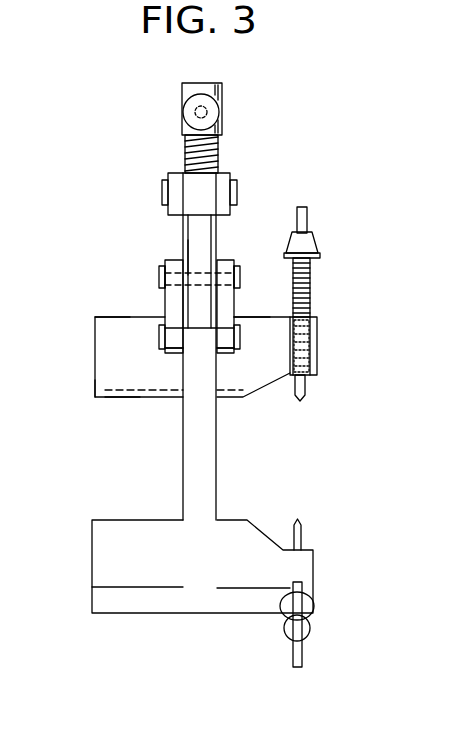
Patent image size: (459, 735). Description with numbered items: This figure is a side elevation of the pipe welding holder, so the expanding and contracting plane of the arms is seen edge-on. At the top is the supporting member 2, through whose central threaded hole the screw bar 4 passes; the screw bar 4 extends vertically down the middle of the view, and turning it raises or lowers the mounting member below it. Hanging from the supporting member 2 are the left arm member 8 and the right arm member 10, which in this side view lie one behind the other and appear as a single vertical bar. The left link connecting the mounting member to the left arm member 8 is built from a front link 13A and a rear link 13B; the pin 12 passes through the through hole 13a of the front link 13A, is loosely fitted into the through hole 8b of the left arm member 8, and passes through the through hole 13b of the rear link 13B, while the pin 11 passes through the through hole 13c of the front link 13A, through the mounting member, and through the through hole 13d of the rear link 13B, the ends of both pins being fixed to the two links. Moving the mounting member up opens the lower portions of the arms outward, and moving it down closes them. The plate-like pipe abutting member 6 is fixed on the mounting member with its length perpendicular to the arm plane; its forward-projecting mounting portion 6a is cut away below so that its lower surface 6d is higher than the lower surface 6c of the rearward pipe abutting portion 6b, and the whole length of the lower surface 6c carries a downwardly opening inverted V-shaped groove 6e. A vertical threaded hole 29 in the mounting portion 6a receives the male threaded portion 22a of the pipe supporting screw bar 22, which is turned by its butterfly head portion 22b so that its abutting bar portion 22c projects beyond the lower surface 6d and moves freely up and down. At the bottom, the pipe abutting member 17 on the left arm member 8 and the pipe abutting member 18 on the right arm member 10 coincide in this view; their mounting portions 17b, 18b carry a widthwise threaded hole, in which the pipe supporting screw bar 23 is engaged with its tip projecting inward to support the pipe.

The supporting member 2 is at (228, 175).
The screw bar 4 is at (180, 232).
The pipe abutting member 6 is at (97, 338).
The mounting portion for pipe supporting bar 6a is at (257, 318).
The pipe abutting portion 6b is at (108, 317).
The lower surface of pipe abutting portion 6c is at (120, 398).
The lower surface of mounting portion 6d is at (315, 380).
The inverted V-shaped groove 6e is at (93, 402).
The left arm member 8 is at (256, 346).
The right arm member 10 is at (213, 483).
The through hole of left arm member 8b is at (197, 274).
The pin 11 is at (160, 335).
The pin 12 is at (163, 273).
The front link 13A is at (222, 260).
The rear link 13B is at (168, 258).
The through hole of front link 13a is at (227, 277).
The through hole of rear link 13b is at (157, 295).
The through hole of front link 13c is at (222, 357).
The through hole of rear link 13d is at (172, 357).
The pipe abutting member 17 is at (202, 598).
The pipe abutting member 18 is at (193, 602).
The mounting portion 17b is at (333, 524).
The mounting portion 18b is at (257, 523).
The pipe supporting screw bar 22 is at (312, 279).
The male threaded portion 22a is at (307, 363).
The butterfly head portion 22b is at (322, 240).
The abutting bar portion 22c is at (307, 402).
The pipe supporting screw bar 23 is at (313, 595).
The vertical threaded hole 29 is at (308, 345).